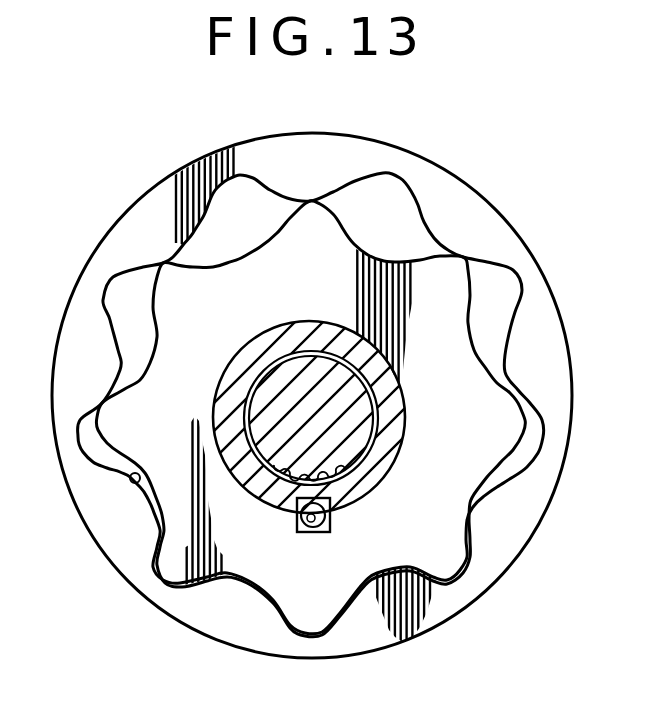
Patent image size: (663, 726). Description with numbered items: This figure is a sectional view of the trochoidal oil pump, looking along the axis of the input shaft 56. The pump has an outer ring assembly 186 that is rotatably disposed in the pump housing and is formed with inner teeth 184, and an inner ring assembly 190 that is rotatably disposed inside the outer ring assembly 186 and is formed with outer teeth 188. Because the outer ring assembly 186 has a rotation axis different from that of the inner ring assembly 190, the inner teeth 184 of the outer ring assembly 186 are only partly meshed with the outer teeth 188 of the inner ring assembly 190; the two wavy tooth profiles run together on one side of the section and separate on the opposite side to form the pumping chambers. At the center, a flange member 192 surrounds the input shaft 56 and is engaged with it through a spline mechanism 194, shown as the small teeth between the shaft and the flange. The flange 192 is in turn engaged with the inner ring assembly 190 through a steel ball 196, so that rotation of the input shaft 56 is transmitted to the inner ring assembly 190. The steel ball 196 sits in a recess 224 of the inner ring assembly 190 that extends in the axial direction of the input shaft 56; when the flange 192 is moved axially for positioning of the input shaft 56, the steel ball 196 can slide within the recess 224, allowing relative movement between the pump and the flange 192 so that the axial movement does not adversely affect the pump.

The input shaft 56 is at (273, 417).
The inner teeth 184 is at (137, 487).
The outer ring assembly 186 is at (233, 623).
The outer teeth 188 is at (473, 505).
The inner ring assembly 190 is at (453, 557).
The flange member 192 is at (256, 369).
The spline mechanism 194 is at (351, 466).
The steel ball 196 is at (330, 532).
The recess 224 is at (300, 525).